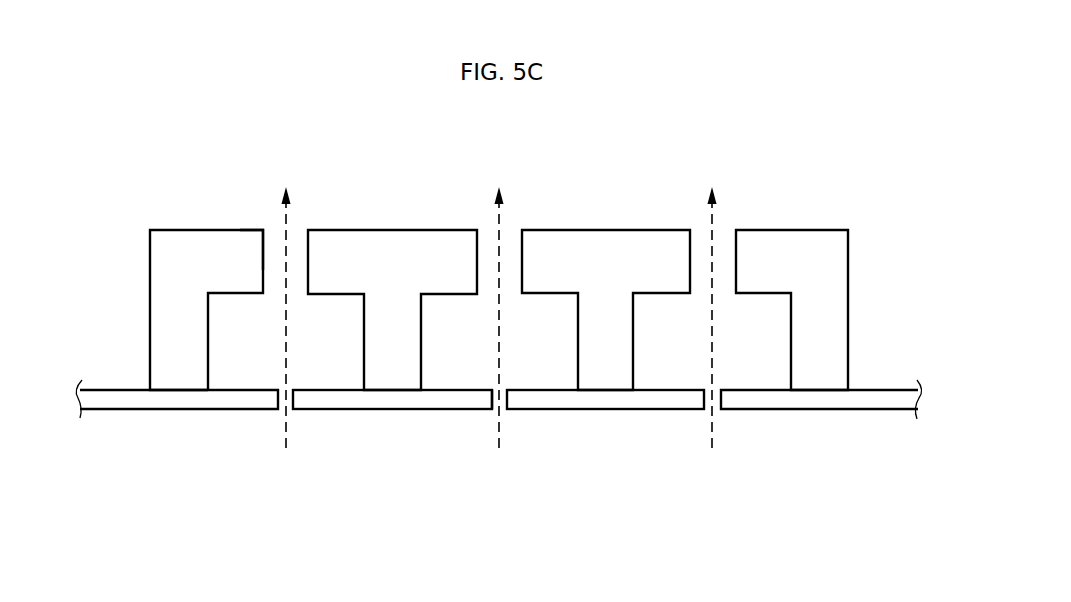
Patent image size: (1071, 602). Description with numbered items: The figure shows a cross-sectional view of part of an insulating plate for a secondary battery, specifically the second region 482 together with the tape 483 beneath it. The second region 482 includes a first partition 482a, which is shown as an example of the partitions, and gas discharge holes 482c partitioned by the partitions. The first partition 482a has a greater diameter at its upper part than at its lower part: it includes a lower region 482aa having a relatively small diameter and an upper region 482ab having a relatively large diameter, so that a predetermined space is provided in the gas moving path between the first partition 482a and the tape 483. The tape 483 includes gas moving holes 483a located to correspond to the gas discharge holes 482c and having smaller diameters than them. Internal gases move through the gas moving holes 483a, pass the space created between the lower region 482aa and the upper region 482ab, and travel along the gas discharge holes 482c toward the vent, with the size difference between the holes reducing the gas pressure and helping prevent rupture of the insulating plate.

The second region 482 is at (618, 183).
The first partition 482a is at (272, 502).
The lower region 482aa is at (180, 365).
The upper region 482ab is at (238, 278).
The gas discharge holes 482c is at (265, 260).
The tape 483 is at (587, 402).
The gas moving holes 483a is at (490, 397).